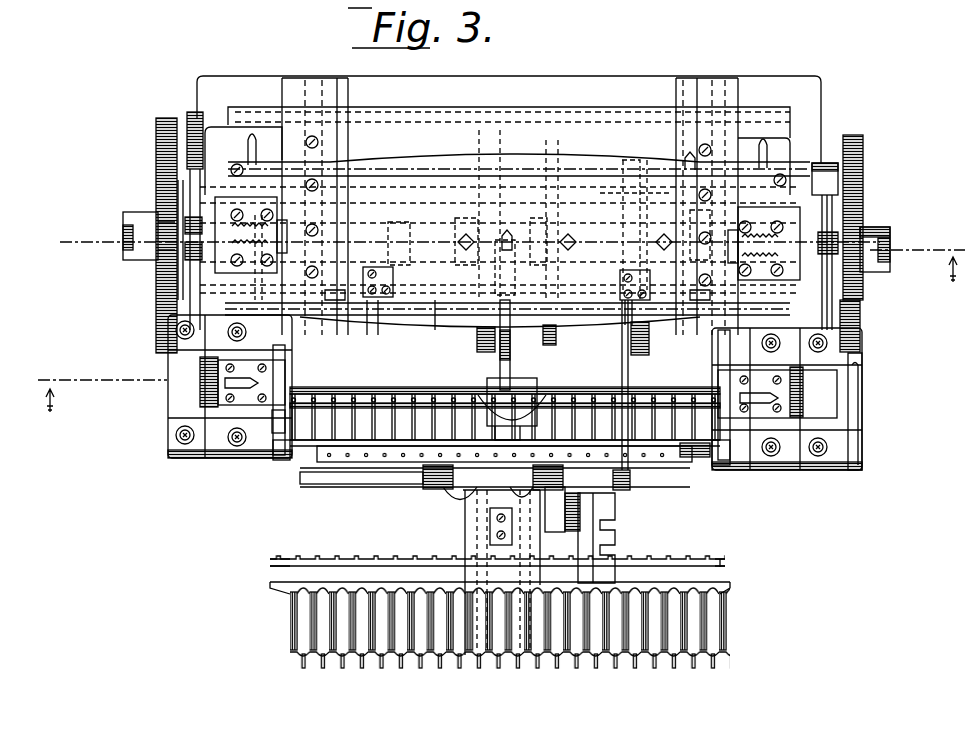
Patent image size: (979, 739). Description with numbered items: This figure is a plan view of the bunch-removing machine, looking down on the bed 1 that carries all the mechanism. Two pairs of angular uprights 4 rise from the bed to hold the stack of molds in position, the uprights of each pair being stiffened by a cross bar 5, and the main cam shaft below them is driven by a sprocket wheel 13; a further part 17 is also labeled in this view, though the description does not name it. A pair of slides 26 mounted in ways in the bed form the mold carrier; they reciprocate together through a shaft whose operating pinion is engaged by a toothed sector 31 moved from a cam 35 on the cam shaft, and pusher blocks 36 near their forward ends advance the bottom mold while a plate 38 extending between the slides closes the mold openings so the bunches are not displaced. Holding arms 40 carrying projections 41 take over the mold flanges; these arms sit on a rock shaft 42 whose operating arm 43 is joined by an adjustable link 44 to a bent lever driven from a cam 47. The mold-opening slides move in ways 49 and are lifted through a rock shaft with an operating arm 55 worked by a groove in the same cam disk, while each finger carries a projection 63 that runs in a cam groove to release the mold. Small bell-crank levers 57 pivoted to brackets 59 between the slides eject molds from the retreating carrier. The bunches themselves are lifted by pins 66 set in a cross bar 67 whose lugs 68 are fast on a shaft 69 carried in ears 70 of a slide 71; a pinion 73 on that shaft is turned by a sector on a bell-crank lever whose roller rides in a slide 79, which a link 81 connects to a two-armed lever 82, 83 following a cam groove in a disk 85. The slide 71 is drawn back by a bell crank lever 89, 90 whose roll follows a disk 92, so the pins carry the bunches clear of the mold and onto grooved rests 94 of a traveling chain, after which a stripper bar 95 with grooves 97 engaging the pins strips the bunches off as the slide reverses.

The bed 1 is at (470, 188).
The angular uprights 4 is at (257, 150).
The cross bar 5 is at (513, 161).
The sprocket wheel 13 is at (557, 330).
The shaft 17 is at (183, 268).
The slides 26 is at (340, 98).
The toothed sector 31 is at (185, 113).
The cam 35 is at (162, 188).
The pusher blocks 36 is at (330, 293).
The plate 38 is at (435, 300).
The arms 40 is at (280, 458).
The projections 41 is at (280, 417).
The rock shaft 42 is at (700, 457).
The operating arm 43 is at (862, 405).
The adjustable link 44 is at (860, 323).
The cam 47 is at (862, 167).
The ways 49 is at (267, 357).
The operating arm 55 is at (823, 167).
The bell-crank levers 57 is at (372, 327).
The brackets 59 is at (367, 272).
The projection 63 is at (205, 362).
The pins 66 is at (375, 392).
The cross bar 67 is at (363, 450).
The lugs 68 is at (400, 480).
The shaft 69 is at (452, 490).
The ears 70 is at (430, 484).
The slide 71 is at (467, 545).
The pinion 73 is at (573, 502).
The slide 79 is at (607, 538).
The link 81 is at (593, 470).
The two-armed lever arm 82 is at (622, 378).
The two-armed lever arm 83 is at (620, 193).
The disk 85 is at (641, 353).
The bell crank lever arm 89 is at (507, 373).
The bell crank lever arm 90 is at (510, 280).
The disk 92 is at (479, 347).
The grooved rests 94 is at (284, 586).
The stripper bar 95 is at (308, 554).
The grooves 97 is at (398, 563).